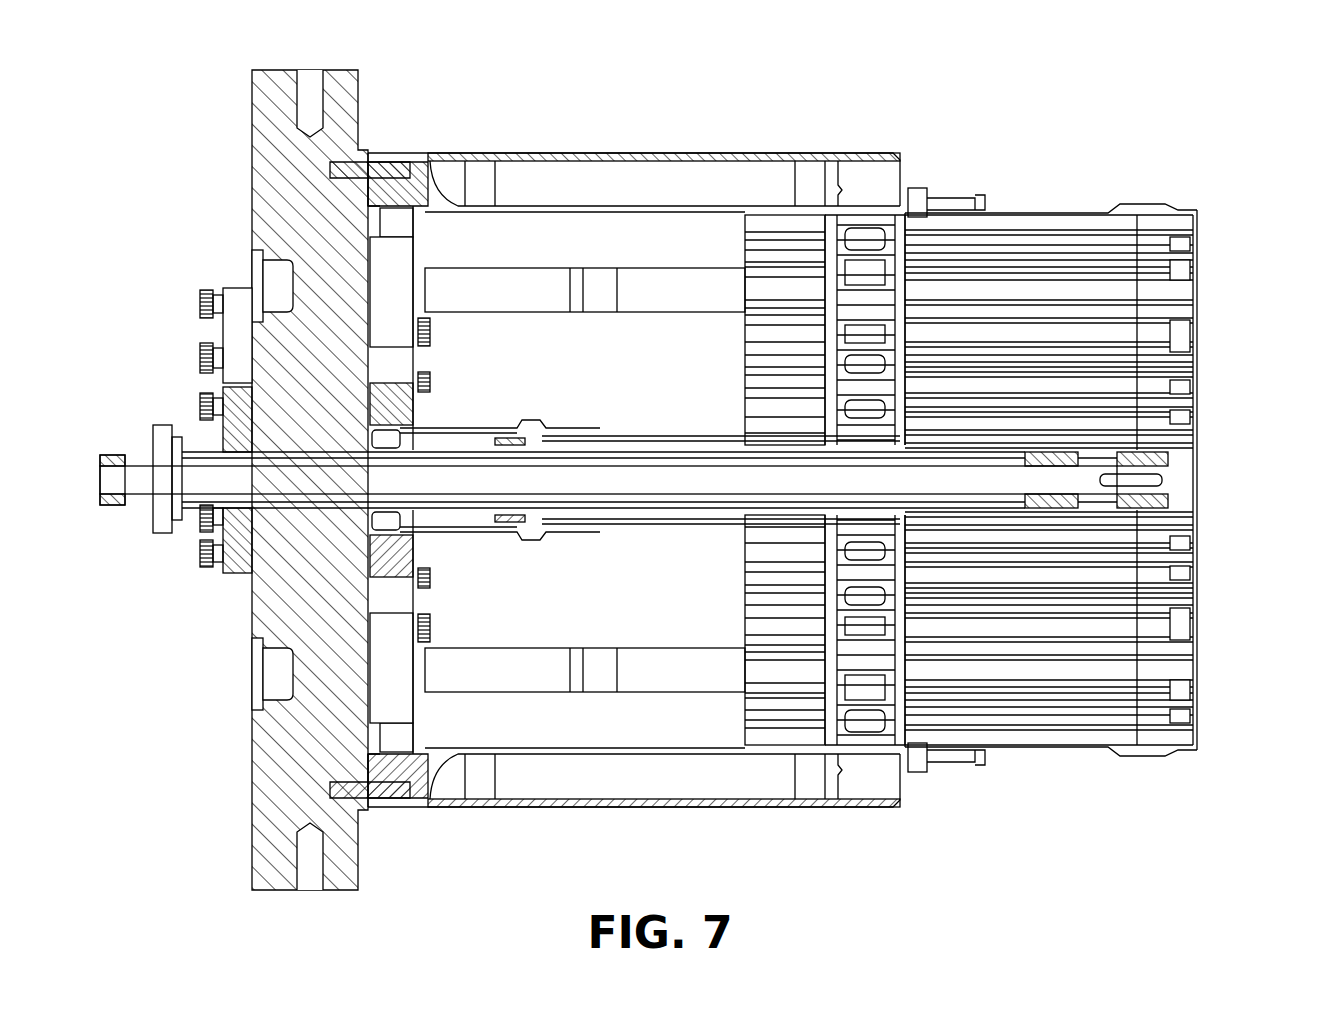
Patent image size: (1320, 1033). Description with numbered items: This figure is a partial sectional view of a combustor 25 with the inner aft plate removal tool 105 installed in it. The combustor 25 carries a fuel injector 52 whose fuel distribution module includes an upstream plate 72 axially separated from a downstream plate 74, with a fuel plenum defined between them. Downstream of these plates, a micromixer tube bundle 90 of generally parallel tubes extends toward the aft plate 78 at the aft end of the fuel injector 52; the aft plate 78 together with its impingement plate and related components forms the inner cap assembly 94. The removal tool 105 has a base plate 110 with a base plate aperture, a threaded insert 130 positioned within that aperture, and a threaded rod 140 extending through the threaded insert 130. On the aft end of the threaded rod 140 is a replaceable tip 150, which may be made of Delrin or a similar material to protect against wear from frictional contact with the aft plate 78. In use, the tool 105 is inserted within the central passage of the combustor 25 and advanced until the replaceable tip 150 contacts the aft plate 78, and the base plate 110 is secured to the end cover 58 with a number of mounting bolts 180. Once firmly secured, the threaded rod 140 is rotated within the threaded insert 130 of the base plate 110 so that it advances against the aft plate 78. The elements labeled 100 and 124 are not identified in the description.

The combustor 25 is at (205, 58).
The end cover 58 is at (250, 190).
The fuel injector 52 is at (610, 148).
The upstream plate 72 is at (820, 150).
The downstream plate 74 is at (924, 188).
The micromixer tube bundle 90 is at (1030, 246).
The inner cap assembly 94 is at (1201, 257).
The aft plate 78 is at (1182, 340).
The replaceable tip 150 is at (1185, 455).
The threaded rod 140 is at (571, 478).
The sleeve 124 is at (655, 525).
The retaining nut 100 is at (103, 452).
The inner aft plate removal tool 105 is at (112, 480).
The mounting bolts 180 is at (205, 398).
The threaded insert 130 is at (205, 535).
The base plate 110 is at (237, 582).